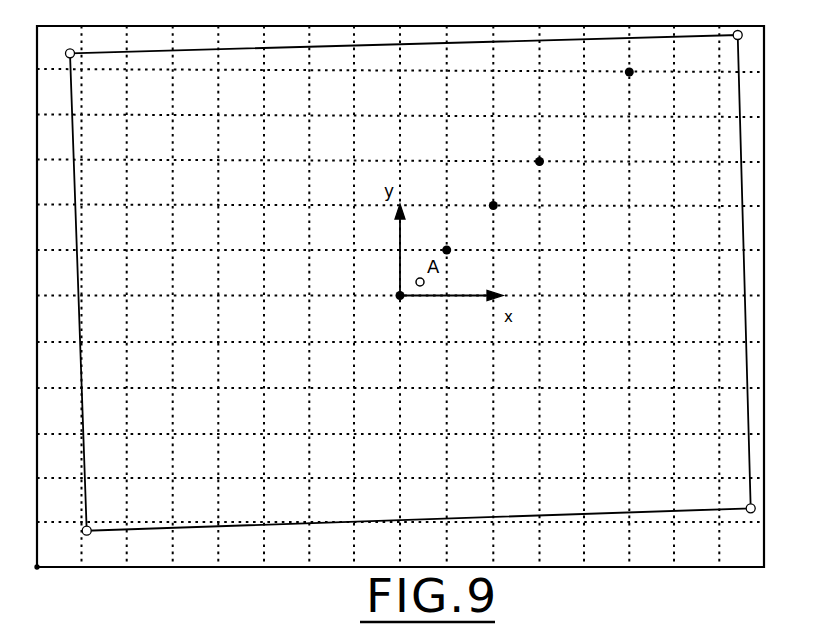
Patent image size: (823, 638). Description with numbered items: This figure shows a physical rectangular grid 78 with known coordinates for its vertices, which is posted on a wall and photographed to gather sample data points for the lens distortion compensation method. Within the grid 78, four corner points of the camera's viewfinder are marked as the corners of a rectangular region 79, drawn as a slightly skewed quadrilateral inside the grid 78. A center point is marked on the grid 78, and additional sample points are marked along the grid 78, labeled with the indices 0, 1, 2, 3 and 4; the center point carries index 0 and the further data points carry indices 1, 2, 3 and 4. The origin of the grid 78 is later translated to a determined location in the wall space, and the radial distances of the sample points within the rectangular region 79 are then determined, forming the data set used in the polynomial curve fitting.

The rectangular grid 78 is at (153, 3).
The rectangular region 79 is at (243, 526).
The point P0 0 is at (387, 281).
The point P1 1 is at (433, 237).
The point P2 2 is at (480, 191).
The point P3 3 is at (526, 147).
The point P4 4 is at (616, 59).